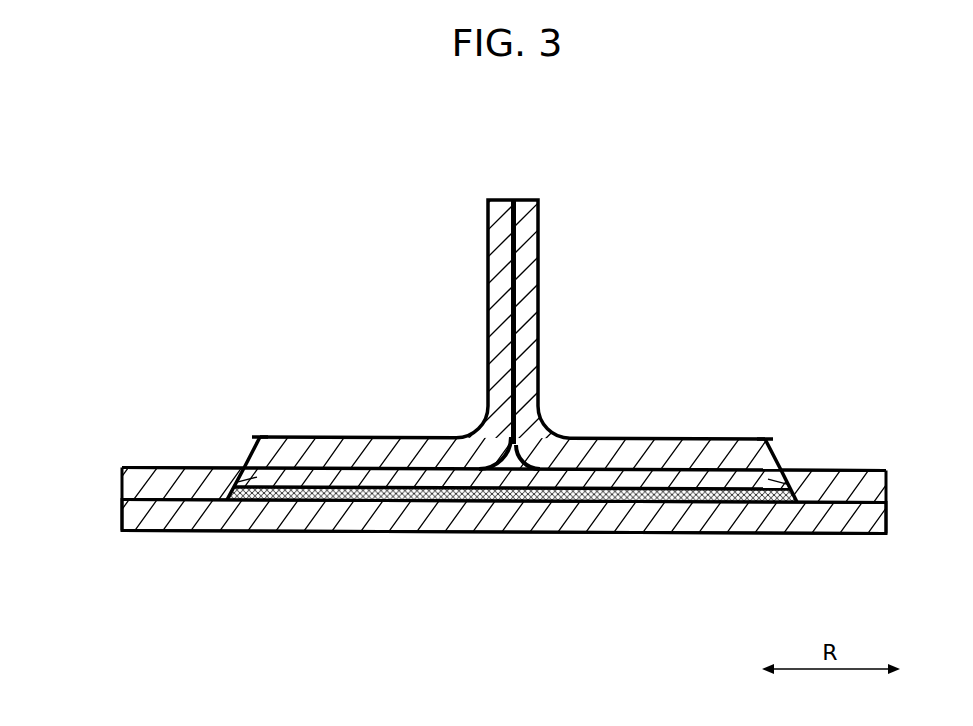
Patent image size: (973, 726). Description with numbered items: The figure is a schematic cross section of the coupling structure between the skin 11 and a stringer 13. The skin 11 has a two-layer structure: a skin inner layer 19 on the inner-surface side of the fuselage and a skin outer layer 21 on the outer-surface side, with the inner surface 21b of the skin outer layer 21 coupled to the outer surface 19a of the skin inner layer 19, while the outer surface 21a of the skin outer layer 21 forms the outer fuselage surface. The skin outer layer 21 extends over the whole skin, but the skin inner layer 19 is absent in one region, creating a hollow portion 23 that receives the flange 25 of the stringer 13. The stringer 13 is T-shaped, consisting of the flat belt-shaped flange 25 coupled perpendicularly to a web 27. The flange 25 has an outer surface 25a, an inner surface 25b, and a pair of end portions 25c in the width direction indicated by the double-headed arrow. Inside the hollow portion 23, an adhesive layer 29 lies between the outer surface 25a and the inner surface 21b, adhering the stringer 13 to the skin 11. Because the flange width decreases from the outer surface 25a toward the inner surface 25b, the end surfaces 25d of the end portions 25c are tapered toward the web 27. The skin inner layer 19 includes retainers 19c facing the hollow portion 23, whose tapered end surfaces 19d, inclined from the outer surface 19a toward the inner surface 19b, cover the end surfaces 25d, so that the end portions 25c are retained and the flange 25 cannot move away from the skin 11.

The skin 11 is at (141, 450).
The stringer 13 is at (488, 190).
The skin inner layer 19 is at (122, 478).
The outer surface of skin inner layer 19a is at (838, 503).
The inner surface of skin inner layer 19b is at (868, 467).
The retainer 19c is at (244, 467).
The end surface of retainer 19d is at (228, 468).
The skin outer layer 21 is at (122, 508).
The outer surface of skin outer layer 21a is at (636, 531).
The inner surface of skin outer layer 21b is at (641, 468).
The hollow portion 23 is at (305, 478).
The flange 25 is at (347, 435).
The outer surface of flange 25a is at (512, 500).
The inner surface of flange 25b is at (406, 435).
The end portion of flange 25c is at (259, 435).
The end surface of flange 25d is at (253, 447).
The web 27 is at (488, 316).
The adhesive layer 29 is at (410, 492).